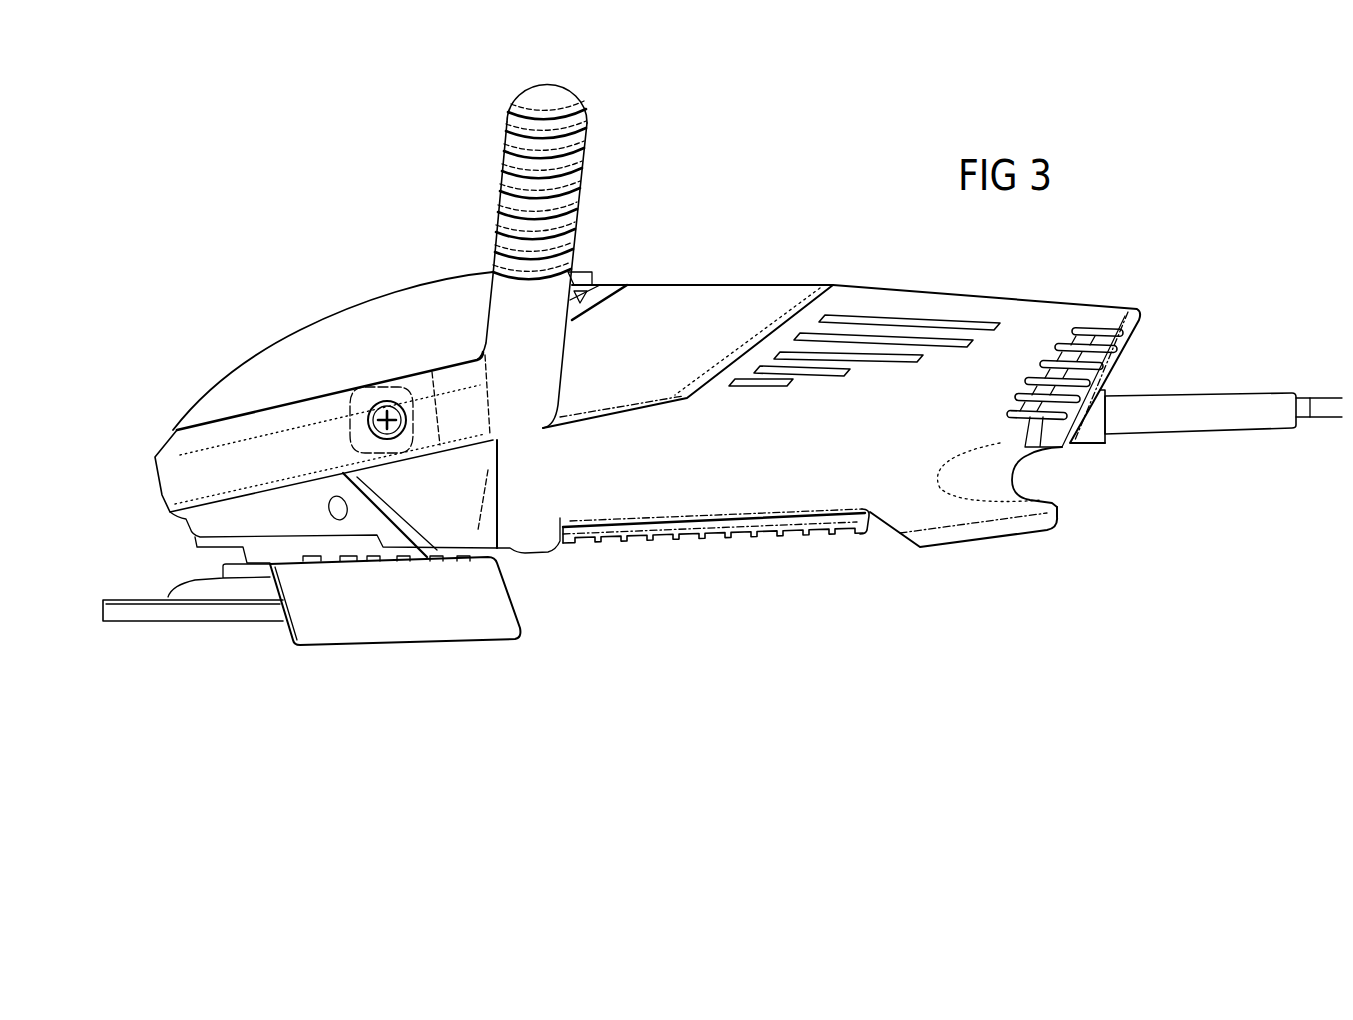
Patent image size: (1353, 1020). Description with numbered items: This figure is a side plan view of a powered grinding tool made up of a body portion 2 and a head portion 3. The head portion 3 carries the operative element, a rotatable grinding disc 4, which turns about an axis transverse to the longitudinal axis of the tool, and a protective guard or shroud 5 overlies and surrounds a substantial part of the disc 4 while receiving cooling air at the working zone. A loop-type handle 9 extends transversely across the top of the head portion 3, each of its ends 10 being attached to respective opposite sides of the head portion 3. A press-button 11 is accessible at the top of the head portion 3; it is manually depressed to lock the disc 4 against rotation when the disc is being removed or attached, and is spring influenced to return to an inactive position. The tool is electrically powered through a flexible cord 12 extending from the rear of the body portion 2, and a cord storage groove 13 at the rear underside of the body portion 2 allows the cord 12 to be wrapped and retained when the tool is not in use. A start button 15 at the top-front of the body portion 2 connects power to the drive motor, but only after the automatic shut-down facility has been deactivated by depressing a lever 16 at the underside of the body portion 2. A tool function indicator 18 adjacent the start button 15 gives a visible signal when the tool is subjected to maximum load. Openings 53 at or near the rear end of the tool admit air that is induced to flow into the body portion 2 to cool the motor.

The body portion 2 is at (742, 283).
The head portion 3 is at (318, 302).
The rotatable grinding disc 4 is at (200, 610).
The protective guard or shroud 5 is at (403, 606).
The loop-type handle 9 is at (560, 88).
The ends of the handle 10 is at (388, 398).
The press-button 11 is at (263, 345).
The flexible cord 12 is at (1327, 410).
The cord storage groove 13 is at (1030, 473).
The start button 15 is at (580, 272).
The lever 16 is at (745, 542).
The tool function indicator 18 is at (596, 282).
The openings 53 is at (1133, 350).